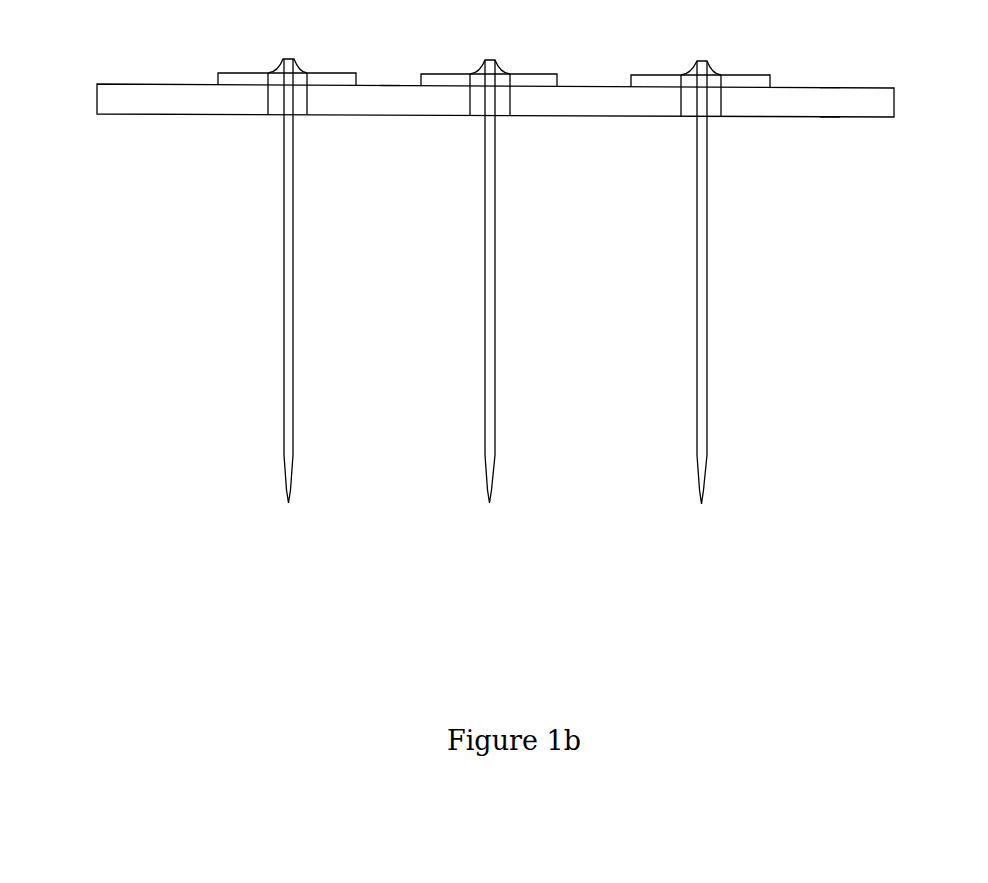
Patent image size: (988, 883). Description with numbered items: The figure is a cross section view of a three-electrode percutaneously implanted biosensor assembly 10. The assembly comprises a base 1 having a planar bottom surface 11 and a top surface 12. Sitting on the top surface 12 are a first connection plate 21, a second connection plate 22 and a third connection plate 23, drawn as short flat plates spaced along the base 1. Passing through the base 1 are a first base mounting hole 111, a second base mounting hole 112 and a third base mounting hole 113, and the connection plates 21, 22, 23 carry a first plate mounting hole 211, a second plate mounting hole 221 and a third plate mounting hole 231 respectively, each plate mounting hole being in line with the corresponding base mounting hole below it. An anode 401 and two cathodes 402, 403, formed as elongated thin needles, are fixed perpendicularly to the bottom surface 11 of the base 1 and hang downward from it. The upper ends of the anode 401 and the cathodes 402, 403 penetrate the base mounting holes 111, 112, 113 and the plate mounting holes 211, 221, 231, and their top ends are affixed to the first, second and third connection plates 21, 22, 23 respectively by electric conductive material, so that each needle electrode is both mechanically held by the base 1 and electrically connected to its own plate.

The base 1 is at (385, 108).
The percutaneously implanted biosensor assembly 10 is at (96, 108).
The bottom surface 11 is at (833, 118).
The top surface 12 is at (833, 87).
The first connection plate 21 is at (237, 80).
The second connection plate 22 is at (447, 80).
The third connection plate 23 is at (647, 83).
The first base mounting hole 111 is at (278, 108).
The second base mounting hole 112 is at (500, 108).
The third base mounting hole 113 is at (713, 108).
The first plate mounting hole 211 is at (300, 80).
The second plate mounting hole 221 is at (500, 79).
The third plate mounting hole 231 is at (712, 82).
The anode 401 is at (283, 262).
The cathode 402 is at (485, 262).
The cathode 403 is at (697, 262).